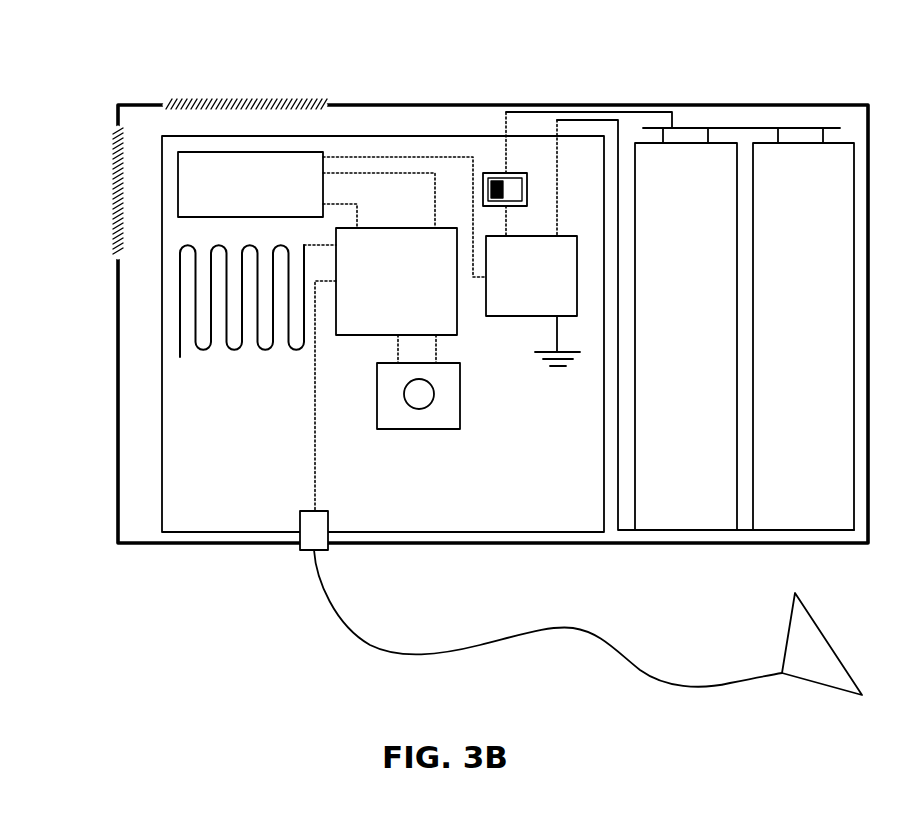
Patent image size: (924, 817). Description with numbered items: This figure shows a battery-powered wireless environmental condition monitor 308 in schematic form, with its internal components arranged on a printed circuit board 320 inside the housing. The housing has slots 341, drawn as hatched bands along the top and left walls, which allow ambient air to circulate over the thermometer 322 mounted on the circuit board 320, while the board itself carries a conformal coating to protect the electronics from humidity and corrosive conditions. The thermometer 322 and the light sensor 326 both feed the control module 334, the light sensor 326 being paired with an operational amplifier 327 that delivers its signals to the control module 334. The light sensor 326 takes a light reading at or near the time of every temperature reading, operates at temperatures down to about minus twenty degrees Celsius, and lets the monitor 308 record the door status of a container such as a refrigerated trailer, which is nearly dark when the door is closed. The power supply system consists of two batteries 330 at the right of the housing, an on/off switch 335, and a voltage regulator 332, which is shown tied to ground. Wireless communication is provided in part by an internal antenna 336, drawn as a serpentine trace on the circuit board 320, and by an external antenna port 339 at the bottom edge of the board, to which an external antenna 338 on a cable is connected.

The environmental condition monitor 308 is at (70, 107).
The slots 341 is at (110, 197).
The printed circuit board 320 is at (578, 506).
The thermometer 322 is at (264, 196).
The control module 334 is at (419, 294).
The voltage regulator 332 is at (549, 292).
The on/off switch 335 is at (500, 174).
The internal antenna 336 is at (251, 309).
The operational amplifier 327 is at (442, 413).
The light sensor 326 is at (422, 387).
The batteries 330 is at (700, 326).
The external antenna port 339 is at (300, 525).
The external antenna 338 is at (788, 630).